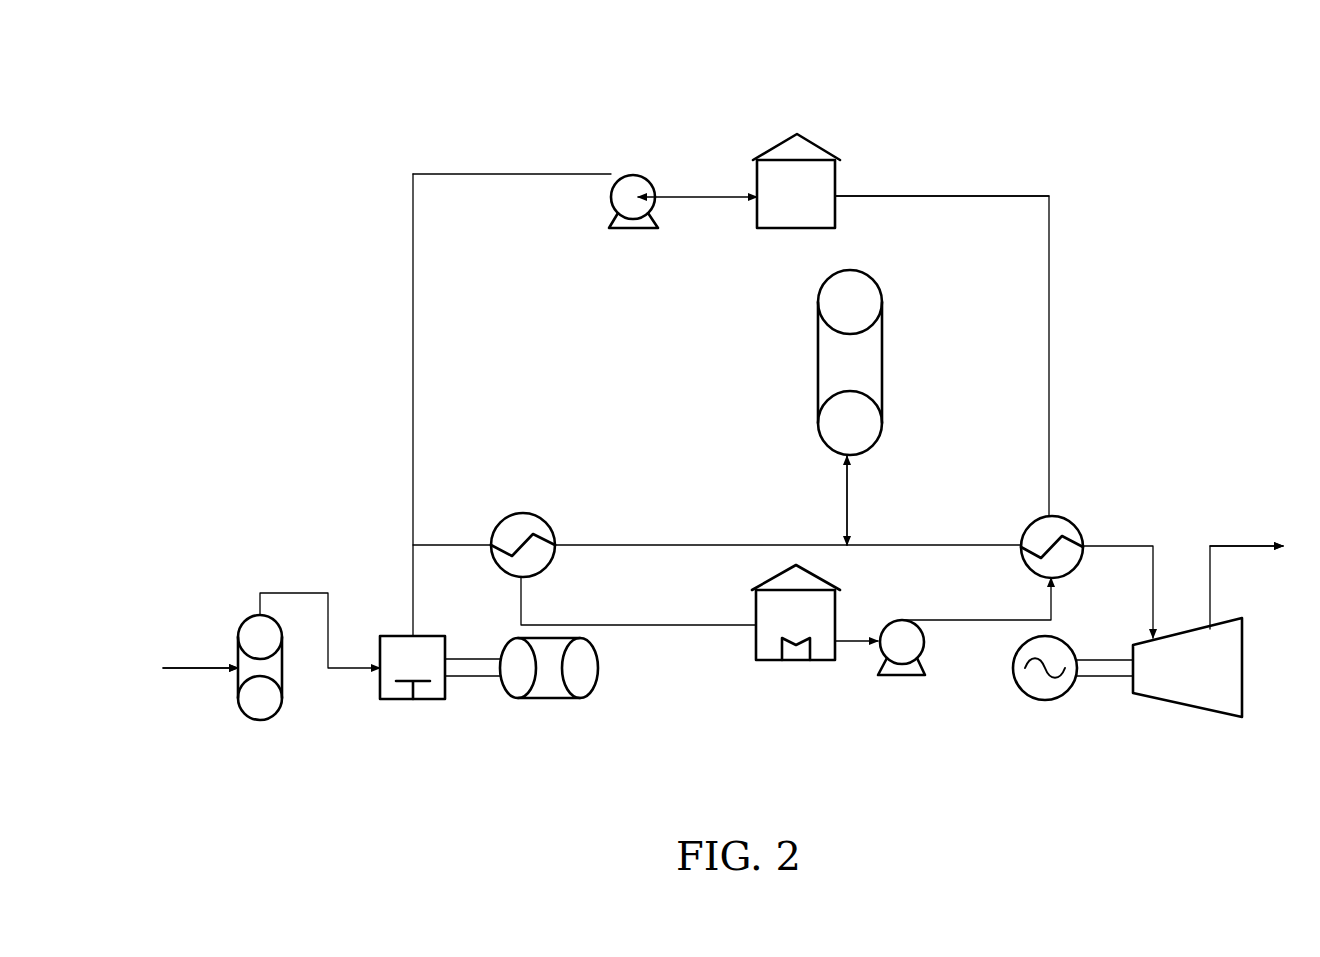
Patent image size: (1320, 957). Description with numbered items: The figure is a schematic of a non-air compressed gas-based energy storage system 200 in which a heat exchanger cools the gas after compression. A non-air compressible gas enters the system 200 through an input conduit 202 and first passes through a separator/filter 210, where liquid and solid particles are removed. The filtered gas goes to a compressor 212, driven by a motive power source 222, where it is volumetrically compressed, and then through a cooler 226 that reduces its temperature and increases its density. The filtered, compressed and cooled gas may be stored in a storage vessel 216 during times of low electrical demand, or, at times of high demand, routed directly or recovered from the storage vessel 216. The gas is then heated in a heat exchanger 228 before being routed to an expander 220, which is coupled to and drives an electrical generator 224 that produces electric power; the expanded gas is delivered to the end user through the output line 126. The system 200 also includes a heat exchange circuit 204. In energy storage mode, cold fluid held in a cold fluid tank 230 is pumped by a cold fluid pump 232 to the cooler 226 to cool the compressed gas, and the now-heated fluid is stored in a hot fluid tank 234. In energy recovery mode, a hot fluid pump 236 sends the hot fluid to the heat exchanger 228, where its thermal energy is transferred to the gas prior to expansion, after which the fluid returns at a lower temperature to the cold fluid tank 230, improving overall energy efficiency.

The non-air compressed gas-based energy storage system 200 is at (518, 100).
The heat exchange circuit 204 is at (963, 192).
The cold fluid pump 232 is at (630, 230).
The cold fluid tank 230 is at (795, 230).
The storage vessel 216 is at (818, 362).
The cooler 226 is at (500, 521).
The heat exchanger 228 is at (1072, 518).
The exhaust stream 126 is at (1248, 546).
The input conduit 202 is at (190, 668).
The separator/filter 210 is at (258, 720).
The compressor 212 is at (410, 699).
The motive power source 222 is at (545, 698).
The hot fluid tank 234 is at (795, 660).
The hot fluid pump 236 is at (900, 675).
The electrical generator 224 is at (1043, 700).
The expander 220 is at (1187, 706).